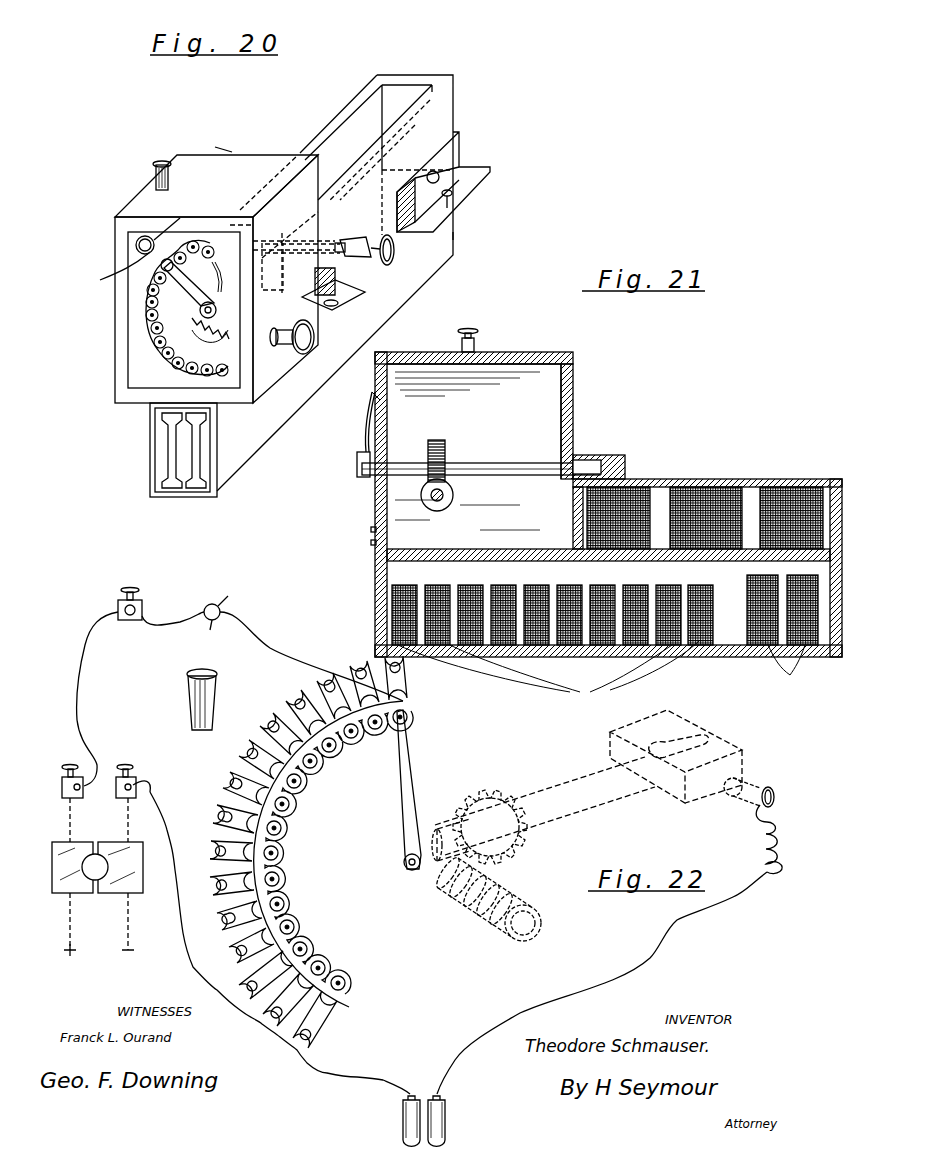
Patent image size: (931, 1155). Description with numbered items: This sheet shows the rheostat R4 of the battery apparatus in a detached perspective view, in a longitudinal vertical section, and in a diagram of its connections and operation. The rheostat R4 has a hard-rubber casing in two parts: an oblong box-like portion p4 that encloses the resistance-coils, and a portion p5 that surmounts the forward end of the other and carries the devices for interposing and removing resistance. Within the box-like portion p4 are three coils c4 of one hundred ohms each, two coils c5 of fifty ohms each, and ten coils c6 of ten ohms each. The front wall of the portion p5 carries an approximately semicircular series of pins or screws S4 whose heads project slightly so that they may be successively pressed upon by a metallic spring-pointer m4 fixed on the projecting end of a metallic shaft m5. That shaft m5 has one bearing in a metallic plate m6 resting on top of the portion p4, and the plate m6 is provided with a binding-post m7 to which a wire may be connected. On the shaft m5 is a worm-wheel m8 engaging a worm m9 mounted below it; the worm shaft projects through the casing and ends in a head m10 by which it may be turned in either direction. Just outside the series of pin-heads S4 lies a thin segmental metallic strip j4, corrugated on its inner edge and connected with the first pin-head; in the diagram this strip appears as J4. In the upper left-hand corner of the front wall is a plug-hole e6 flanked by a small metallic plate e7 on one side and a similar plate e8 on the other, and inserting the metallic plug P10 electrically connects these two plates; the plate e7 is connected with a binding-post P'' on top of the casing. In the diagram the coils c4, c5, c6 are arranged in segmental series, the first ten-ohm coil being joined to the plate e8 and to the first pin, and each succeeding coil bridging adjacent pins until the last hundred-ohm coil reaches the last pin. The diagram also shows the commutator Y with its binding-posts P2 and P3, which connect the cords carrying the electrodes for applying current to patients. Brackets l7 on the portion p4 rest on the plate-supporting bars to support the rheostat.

In FIG. 20, the rheostat R4 is at (248, 132).
In FIG. 22, the rheostat R4 is at (472, 730).
In FIG. 20, the rheostat-casing portion p4 is at (350, 283).
In FIG. 21, the rheostat-casing portion p4 is at (763, 465).
In FIG. 20, the rheostat-casing portion p5 is at (215, 142).
In FIG. 21, the rheostat-casing portion p5 is at (573, 410).
In FIG. 20, the binding-post P'' is at (174, 175).
In FIG. 21, the binding-post P'' is at (468, 332).
In FIG. 22, the binding-post P'' is at (139, 603).
In FIG. 20, the plug-hole e6 is at (171, 221).
In FIG. 22, the plug-hole e6 is at (231, 595).
In FIG. 20, the metallic plate e7 is at (135, 245).
In FIG. 22, the metallic plate e7 is at (204, 604).
In FIG. 20, the metallic plate e8 is at (121, 272).
In FIG. 22, the metallic plate e8 is at (213, 634).
In FIG. 20, the metallic strip j4 is at (224, 240).
In FIG. 22, the metallic strip J4 is at (347, 854).
In FIG. 20, the pins or screws S4 is at (212, 256).
In FIG. 21, the pins or screws S4 is at (365, 464).
In FIG. 22, the pins or screws S4 is at (370, 730).
In FIG. 20, the spring-pointer m4 is at (188, 288).
In FIG. 21, the spring-pointer m4 is at (364, 440).
In FIG. 22, the spring-pointer m4 is at (412, 780).
In FIG. 20, the shaft m5 is at (294, 258).
In FIG. 21, the shaft m5 is at (481, 455).
In FIG. 22, the shaft m5 is at (543, 809).
In FIG. 20, the metallic plate m6 is at (283, 249).
In FIG. 21, the metallic plate m6 is at (603, 455).
In FIG. 22, the metallic plate m6 is at (676, 753).
In FIG. 20, the binding-post m7 is at (356, 245).
In FIG. 22, the binding-post m7 is at (742, 780).
In FIG. 20, the worm-wheel m8 is at (216, 277).
In FIG. 21, the worm-wheel m8 is at (437, 440).
In FIG. 22, the worm-wheel m8 is at (490, 816).
In FIG. 20, the worm m9 is at (228, 325).
In FIG. 21, the worm m9 is at (450, 505).
In FIG. 22, the worm m9 is at (505, 880).
In FIG. 20, the head m10 is at (310, 347).
In FIG. 20, the brackets l7 is at (396, 221).
In FIG. 21, the resistance box R is at (608, 491).
In FIG. 21, the resistance-coils c4 is at (705, 504).
In FIG. 22, the resistance-coils c4 is at (281, 1001).
In FIG. 21, the resistance-coils c5 is at (782, 633).
In FIG. 22, the resistance-coils c5 is at (237, 932).
In FIG. 21, the resistance-coils c6 is at (552, 636).
In FIG. 22, the resistance-coils c6 is at (300, 775).
In FIG. 22, the binding-post P2 is at (65, 773).
In FIG. 22, the binding-post P3 is at (138, 795).
In FIG. 22, the metallic plug P10 is at (214, 697).
In FIG. 22, the commutator Y is at (97, 877).